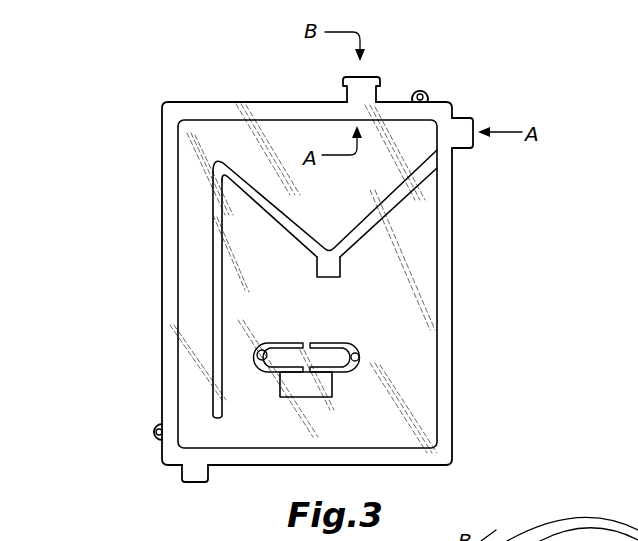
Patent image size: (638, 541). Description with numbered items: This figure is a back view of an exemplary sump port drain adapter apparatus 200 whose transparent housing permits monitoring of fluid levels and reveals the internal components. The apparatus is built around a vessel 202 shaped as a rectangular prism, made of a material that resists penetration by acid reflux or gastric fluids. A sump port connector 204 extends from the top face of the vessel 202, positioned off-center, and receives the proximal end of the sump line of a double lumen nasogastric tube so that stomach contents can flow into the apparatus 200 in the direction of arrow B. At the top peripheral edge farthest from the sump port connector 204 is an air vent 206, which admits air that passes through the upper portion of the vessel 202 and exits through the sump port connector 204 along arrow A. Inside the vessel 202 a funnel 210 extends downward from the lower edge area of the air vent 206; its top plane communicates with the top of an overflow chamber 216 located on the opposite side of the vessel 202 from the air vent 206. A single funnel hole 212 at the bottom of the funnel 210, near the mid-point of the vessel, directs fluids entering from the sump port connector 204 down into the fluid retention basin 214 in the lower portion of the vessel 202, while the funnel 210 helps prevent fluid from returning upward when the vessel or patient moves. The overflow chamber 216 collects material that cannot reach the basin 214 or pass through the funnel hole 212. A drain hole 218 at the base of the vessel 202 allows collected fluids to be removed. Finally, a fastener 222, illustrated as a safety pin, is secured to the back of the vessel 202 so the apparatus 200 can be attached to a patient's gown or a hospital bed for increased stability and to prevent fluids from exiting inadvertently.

The sump port drain adapter apparatus 200 is at (158, 54).
The vessel 202 is at (398, 102).
The sump port connector 204 is at (358, 78).
The air vent 206 is at (459, 133).
The funnel 210 is at (390, 212).
The funnel hole 212 is at (325, 268).
The fluid retention basin 214 is at (400, 325).
The overflow chamber 216 is at (190, 243).
The drain hole 218 is at (192, 470).
The fastener 222 is at (347, 368).